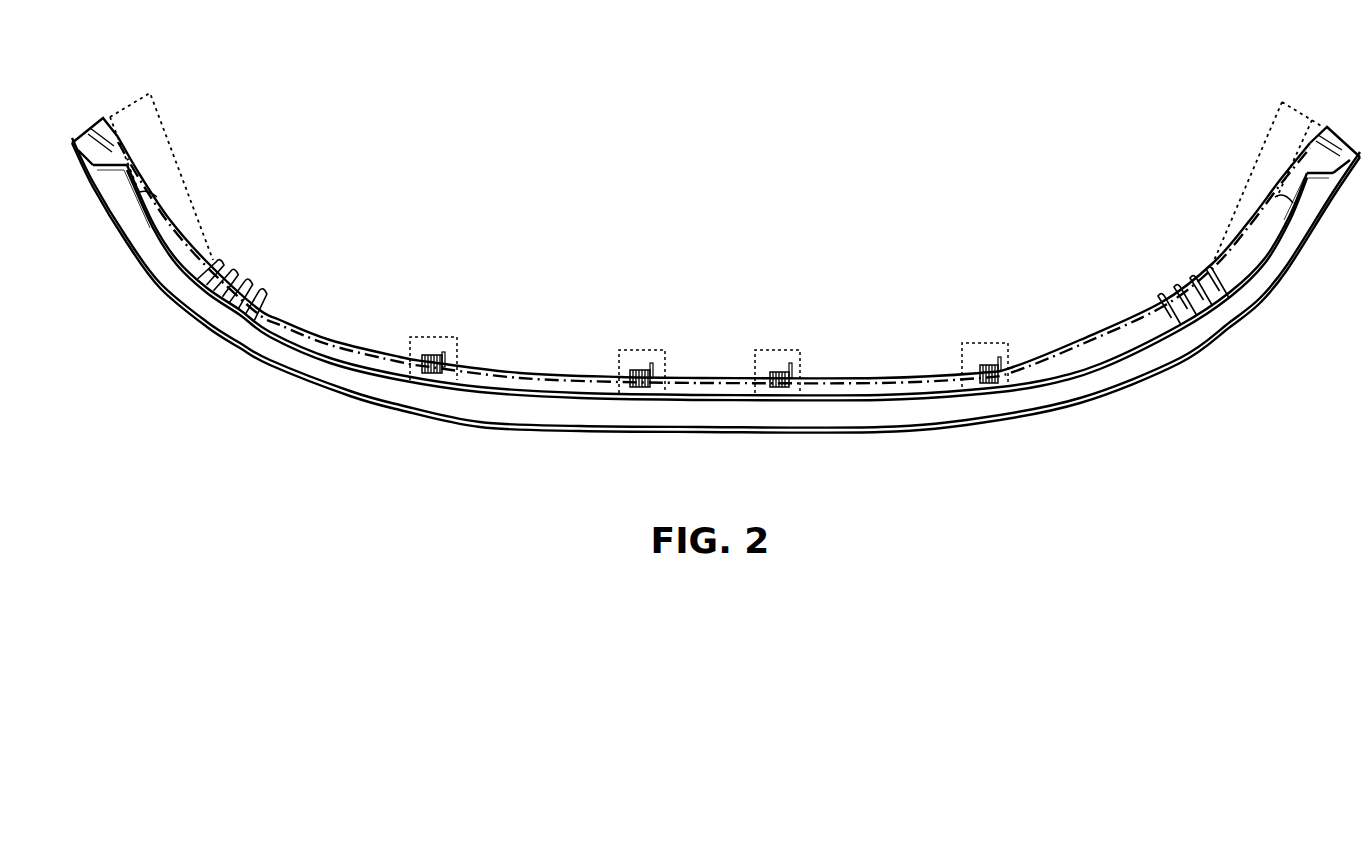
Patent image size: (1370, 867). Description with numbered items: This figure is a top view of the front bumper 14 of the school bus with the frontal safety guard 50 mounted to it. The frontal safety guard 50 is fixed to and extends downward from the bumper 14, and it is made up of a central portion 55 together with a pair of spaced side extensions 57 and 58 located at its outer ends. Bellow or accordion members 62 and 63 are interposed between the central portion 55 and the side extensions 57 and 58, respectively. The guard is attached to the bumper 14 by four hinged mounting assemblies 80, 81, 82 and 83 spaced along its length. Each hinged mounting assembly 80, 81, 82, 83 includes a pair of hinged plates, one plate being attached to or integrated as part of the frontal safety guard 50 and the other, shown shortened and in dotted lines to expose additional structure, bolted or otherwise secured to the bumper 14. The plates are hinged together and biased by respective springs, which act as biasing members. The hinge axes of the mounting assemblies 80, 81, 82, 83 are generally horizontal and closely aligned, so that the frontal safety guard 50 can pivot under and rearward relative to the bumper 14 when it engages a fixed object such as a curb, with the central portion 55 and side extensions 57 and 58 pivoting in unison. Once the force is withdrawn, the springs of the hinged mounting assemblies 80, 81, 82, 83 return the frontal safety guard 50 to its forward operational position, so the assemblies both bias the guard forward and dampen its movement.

The front bumper 14 is at (883, 413).
The frontal safety guard 50 is at (521, 375).
The central portion 55 is at (875, 378).
The side extension 57 is at (100, 130).
The side extension 58 is at (1334, 146).
The bellow or accordion member 62 is at (250, 282).
The bellow or accordion member 63 is at (1180, 283).
The hinged mounting assembly 80 is at (434, 336).
The hinged mounting assembly 81 is at (638, 367).
The hinged mounting assembly 82 is at (778, 368).
The hinged mounting assembly 83 is at (985, 358).